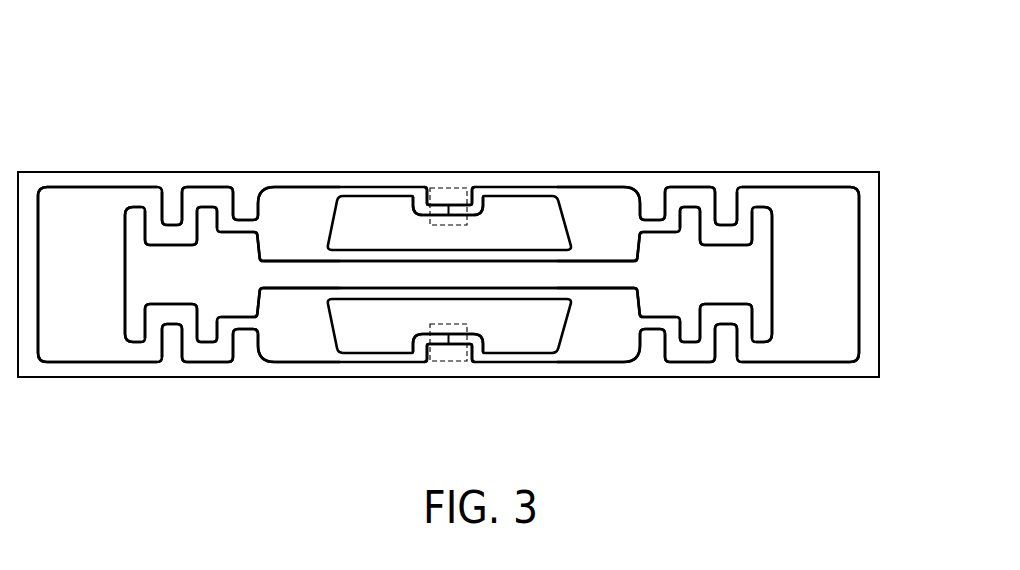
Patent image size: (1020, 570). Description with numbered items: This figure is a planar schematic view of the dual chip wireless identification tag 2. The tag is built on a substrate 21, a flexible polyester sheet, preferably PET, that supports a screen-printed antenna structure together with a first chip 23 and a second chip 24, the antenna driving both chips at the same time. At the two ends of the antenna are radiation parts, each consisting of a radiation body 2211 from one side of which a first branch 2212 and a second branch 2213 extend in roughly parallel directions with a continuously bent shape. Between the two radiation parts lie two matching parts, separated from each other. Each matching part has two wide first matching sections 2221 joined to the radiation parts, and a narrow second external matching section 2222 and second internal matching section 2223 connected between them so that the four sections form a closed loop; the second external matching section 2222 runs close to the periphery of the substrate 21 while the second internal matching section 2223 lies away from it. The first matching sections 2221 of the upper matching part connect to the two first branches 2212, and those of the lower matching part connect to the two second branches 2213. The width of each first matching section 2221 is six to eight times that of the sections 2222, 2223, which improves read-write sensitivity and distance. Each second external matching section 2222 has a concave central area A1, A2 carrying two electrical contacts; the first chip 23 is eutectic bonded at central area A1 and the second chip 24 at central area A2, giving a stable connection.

The dual chip wireless identification tag 2 is at (815, 63).
The substrate 21 is at (881, 247).
The first chip 23 is at (457, 185).
The second chip 24 is at (456, 363).
The radiation body 2211 is at (82, 208).
The first branch 2212 is at (195, 197).
The second branch 2213 is at (199, 347).
The first matching section 2221 is at (292, 210).
The second external matching section 2222 is at (520, 205).
The second internal matching section 2223 is at (378, 257).
The central area A1 is at (432, 184).
The central area A2 is at (431, 366).